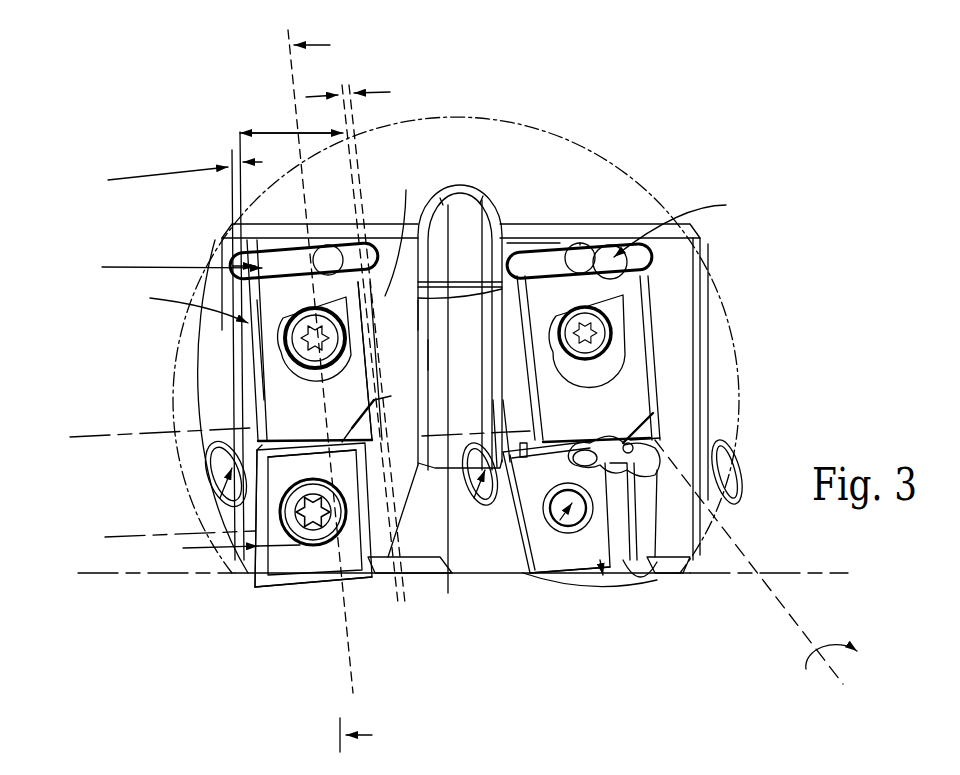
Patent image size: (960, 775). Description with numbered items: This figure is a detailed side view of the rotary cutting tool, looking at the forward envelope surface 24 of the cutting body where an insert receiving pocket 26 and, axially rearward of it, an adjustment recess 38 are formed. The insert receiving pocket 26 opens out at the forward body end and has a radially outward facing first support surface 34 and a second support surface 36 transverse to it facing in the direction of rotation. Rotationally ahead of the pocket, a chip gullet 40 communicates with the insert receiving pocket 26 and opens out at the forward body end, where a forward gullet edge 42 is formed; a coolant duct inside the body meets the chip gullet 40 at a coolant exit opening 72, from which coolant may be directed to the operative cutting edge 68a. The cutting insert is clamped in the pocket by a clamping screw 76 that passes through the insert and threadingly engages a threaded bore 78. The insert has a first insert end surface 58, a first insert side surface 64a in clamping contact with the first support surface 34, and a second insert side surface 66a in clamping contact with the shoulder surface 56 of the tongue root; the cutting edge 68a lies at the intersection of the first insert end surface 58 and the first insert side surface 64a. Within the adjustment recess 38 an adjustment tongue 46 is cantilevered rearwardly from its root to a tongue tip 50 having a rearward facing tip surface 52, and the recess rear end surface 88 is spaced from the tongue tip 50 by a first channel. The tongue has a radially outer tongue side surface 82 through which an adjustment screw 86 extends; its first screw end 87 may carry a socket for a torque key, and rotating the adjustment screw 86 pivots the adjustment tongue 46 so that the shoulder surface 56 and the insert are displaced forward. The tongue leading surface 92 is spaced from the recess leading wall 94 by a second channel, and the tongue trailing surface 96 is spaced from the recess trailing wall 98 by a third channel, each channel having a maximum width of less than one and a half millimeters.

The forward envelope surface 24 is at (681, 293).
The insert receiving pocket 26 is at (603, 582).
The first support surface 34 is at (552, 578).
The second support surface 36 is at (600, 582).
The adjustment recess 38 is at (652, 440).
The chip gullet 40 is at (473, 308).
The forward gullet edge 42 is at (470, 578).
The adjustment tongue 46 is at (306, 423).
The tongue tip 50 is at (582, 258).
The tip surface 52 is at (548, 272).
The shoulder surface 56 is at (672, 410).
The first insert end surface 58 is at (258, 535).
The first insert side surface 64a is at (308, 588).
The second insert side surface 66a is at (262, 590).
The cutting edge 68a is at (256, 553).
The coolant exit opening 72 is at (216, 478).
The clamping screw 76 is at (280, 588).
The threaded bore 78 is at (593, 588).
The radially outer tongue side surface 82 is at (359, 414).
The adjustment screw 86 is at (612, 323).
The first screw end 87 is at (612, 347).
The recess rear end surface 88 is at (240, 263).
The tongue leading surface 92 is at (262, 384).
The recess leading wall 94 is at (253, 350).
The tongue trailing surface 96 is at (387, 315).
The recess trailing wall 98 is at (400, 357).